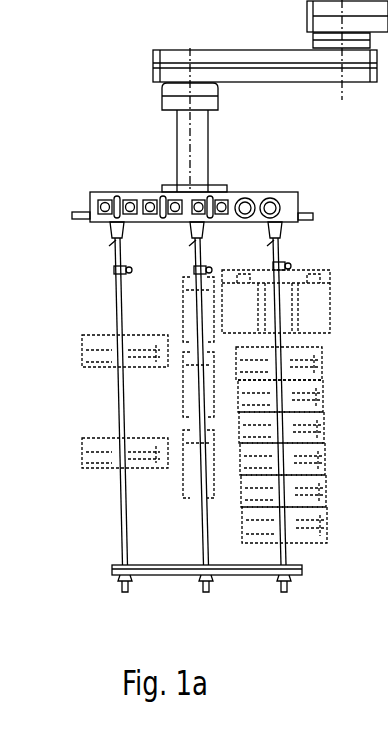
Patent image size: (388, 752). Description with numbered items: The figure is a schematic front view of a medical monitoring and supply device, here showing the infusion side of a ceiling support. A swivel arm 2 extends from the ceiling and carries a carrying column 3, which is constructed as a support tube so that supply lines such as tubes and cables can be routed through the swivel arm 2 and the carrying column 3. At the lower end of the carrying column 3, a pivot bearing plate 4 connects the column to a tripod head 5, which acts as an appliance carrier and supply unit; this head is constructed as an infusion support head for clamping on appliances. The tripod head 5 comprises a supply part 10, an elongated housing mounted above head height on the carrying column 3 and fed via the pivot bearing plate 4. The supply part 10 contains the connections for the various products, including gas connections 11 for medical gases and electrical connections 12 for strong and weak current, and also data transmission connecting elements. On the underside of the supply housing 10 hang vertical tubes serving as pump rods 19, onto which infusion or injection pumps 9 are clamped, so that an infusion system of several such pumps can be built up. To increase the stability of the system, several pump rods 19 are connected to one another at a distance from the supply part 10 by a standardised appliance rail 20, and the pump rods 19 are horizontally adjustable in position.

The swivel arm 2 is at (303, 82).
The carrying column 3 is at (177, 138).
The pivot bearing plate 4 is at (218, 187).
The supply part 10 is at (90, 192).
The gas connection 11 is at (273, 200).
The electrical connection 12 is at (145, 225).
The tripod head 5 is at (292, 262).
The infusion or injection pump 9 is at (332, 313).
The pump rod 19 is at (120, 505).
The appliance rail 20 is at (242, 575).